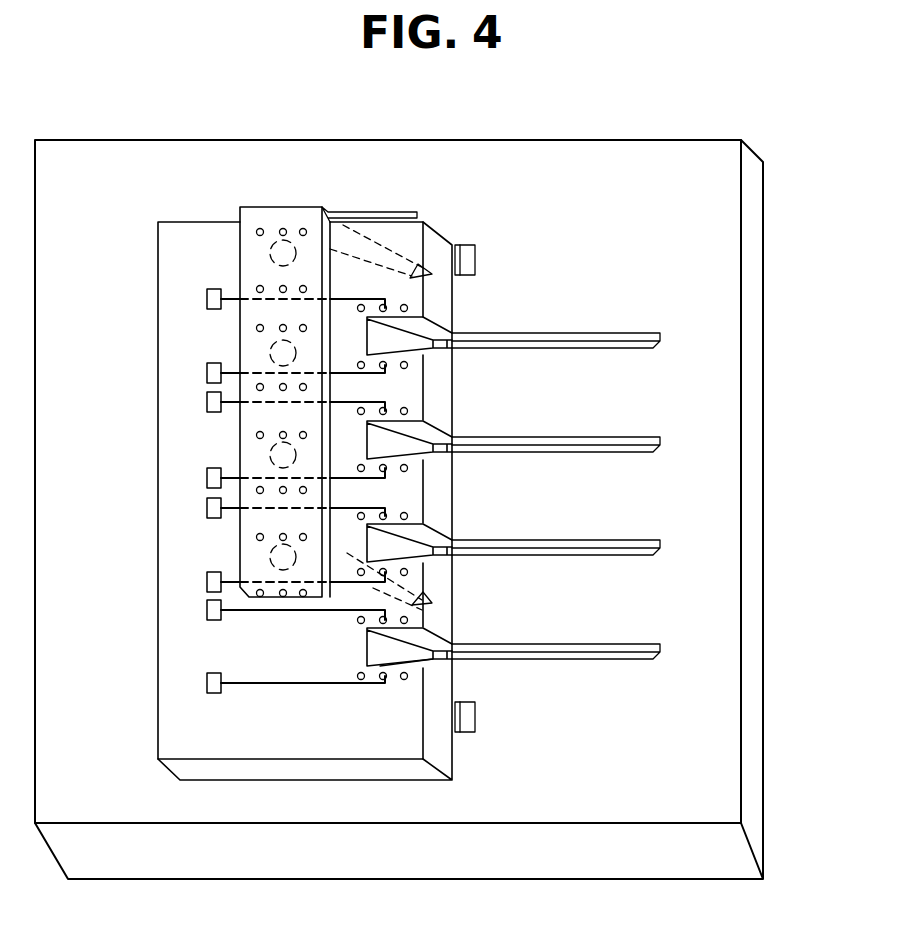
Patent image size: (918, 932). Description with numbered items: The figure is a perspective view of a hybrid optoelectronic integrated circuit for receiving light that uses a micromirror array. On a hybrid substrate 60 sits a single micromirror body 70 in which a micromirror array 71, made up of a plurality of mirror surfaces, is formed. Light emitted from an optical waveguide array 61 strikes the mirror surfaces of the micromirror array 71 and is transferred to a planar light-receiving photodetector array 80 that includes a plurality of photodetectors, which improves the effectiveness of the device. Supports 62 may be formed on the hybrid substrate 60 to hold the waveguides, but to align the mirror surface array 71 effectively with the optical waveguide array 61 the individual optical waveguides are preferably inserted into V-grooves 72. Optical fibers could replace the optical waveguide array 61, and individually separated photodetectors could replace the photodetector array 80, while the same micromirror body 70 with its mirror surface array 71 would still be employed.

The hybrid substrate 60 is at (697, 140).
The optical waveguide array 61 is at (660, 335).
The supports 62 is at (475, 259).
The micromirror body 70 is at (413, 697).
The micromirror array 71 is at (395, 345).
The V-grooves 72 is at (405, 667).
The planar light-receiving photodetector array 80 is at (280, 215).